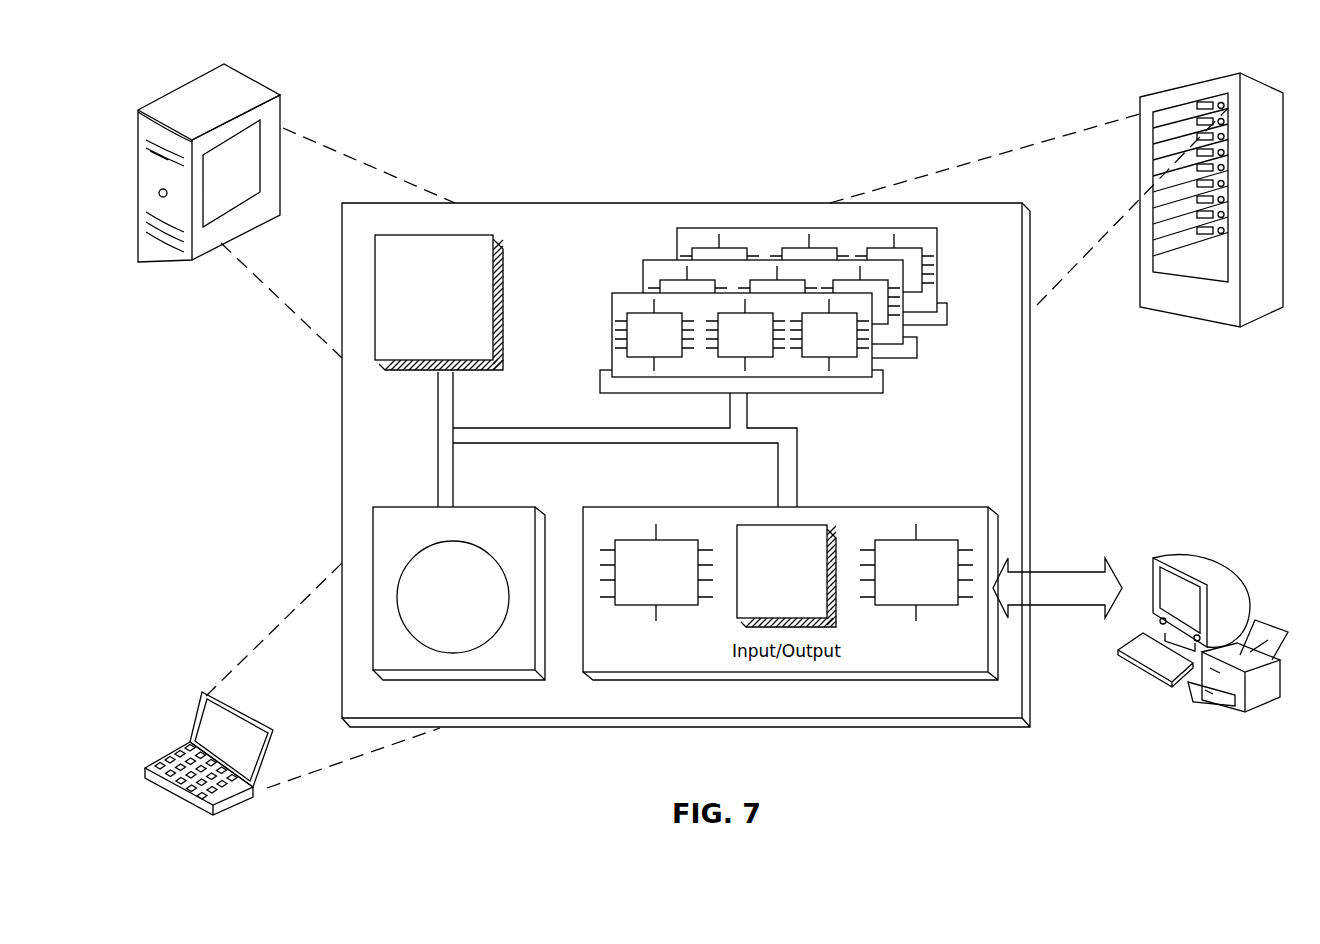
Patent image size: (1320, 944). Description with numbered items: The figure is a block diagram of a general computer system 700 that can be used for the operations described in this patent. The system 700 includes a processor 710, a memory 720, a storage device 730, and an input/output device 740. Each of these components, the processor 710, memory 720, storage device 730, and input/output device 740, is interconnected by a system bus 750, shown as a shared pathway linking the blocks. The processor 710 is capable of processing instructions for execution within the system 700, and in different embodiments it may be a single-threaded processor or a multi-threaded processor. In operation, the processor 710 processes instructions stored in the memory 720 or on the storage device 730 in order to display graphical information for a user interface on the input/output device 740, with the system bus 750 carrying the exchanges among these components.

The general computer system 700 is at (518, 90).
The processor 710 is at (483, 350).
The memory 720 is at (944, 360).
The storage device 730 is at (523, 661).
The input/output device 740 is at (1153, 562).
The system bus 750 is at (615, 445).